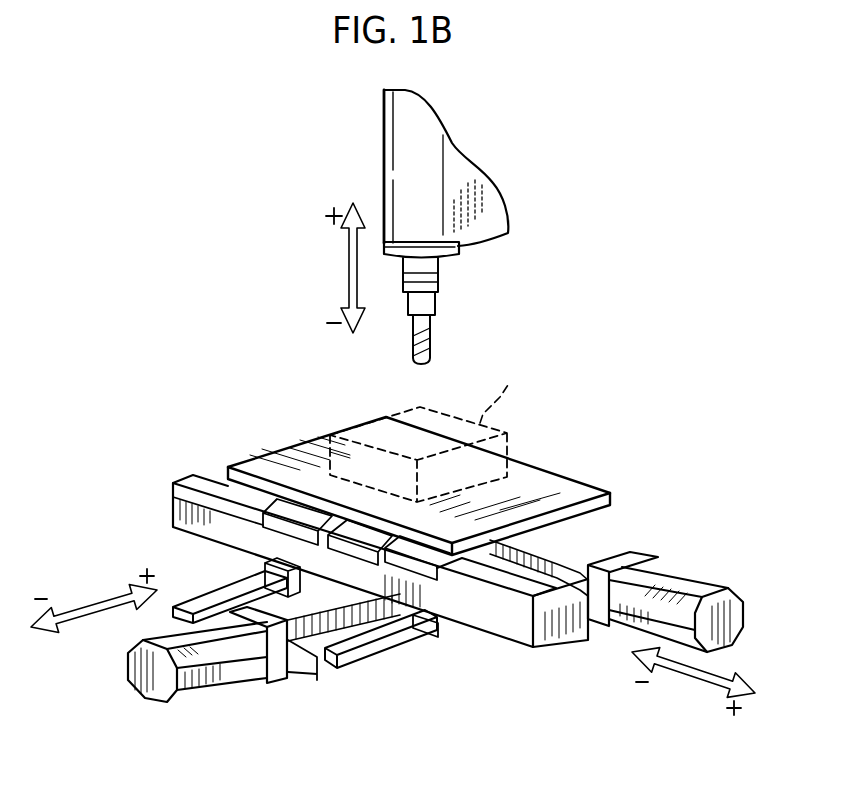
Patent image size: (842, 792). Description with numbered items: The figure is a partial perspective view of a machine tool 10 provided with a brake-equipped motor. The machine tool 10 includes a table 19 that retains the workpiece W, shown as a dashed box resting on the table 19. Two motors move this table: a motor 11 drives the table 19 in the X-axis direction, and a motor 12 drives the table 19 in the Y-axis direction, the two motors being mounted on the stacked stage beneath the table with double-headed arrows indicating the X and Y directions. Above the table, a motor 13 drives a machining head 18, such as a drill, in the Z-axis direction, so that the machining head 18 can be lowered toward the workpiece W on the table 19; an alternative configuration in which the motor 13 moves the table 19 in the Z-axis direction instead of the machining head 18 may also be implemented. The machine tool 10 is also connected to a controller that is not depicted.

The machine tool 10 is at (148, 315).
The motor 11 is at (685, 593).
The motor 12 is at (230, 662).
The motor 13 is at (467, 173).
The machining head 18 is at (433, 353).
The table 19 is at (570, 490).